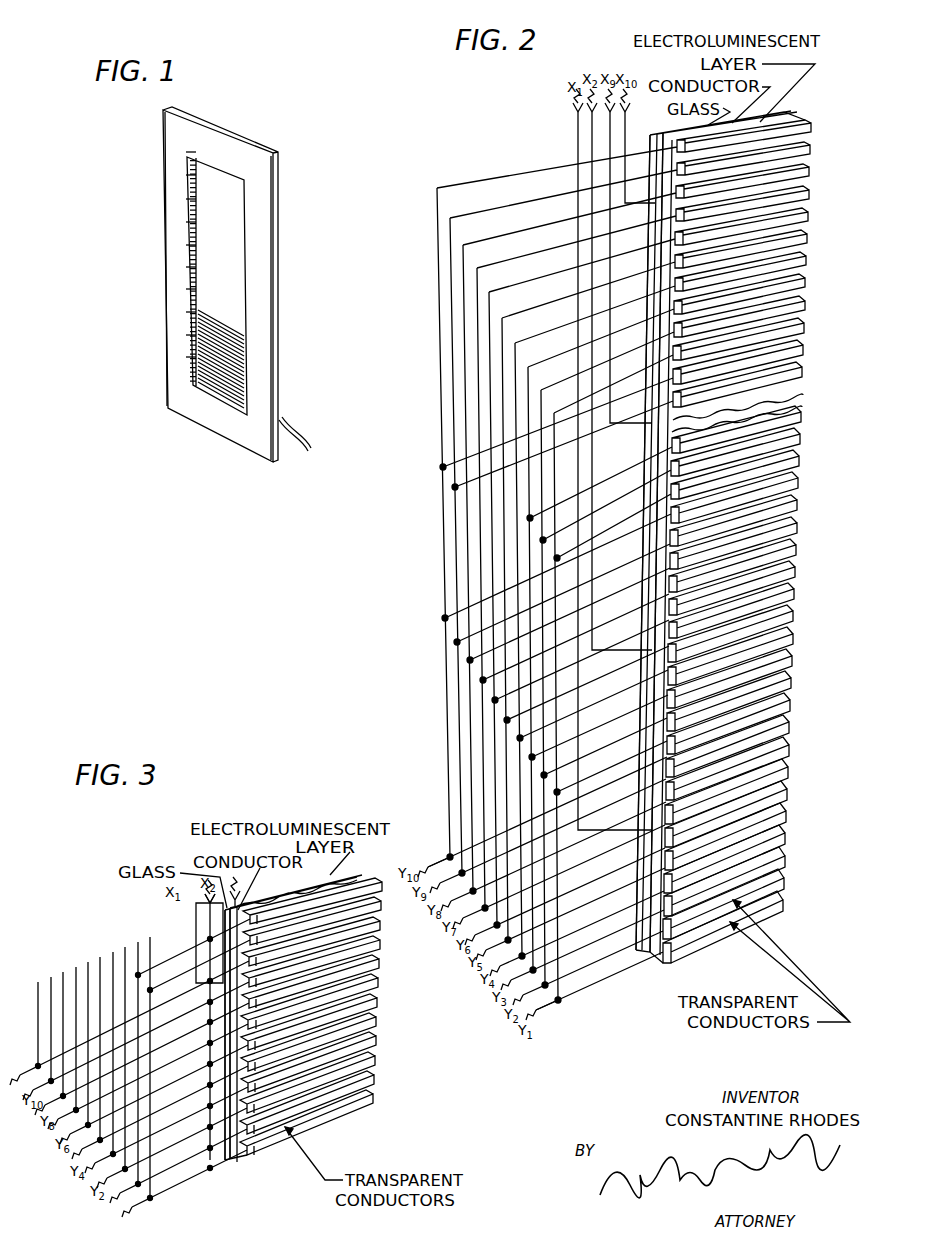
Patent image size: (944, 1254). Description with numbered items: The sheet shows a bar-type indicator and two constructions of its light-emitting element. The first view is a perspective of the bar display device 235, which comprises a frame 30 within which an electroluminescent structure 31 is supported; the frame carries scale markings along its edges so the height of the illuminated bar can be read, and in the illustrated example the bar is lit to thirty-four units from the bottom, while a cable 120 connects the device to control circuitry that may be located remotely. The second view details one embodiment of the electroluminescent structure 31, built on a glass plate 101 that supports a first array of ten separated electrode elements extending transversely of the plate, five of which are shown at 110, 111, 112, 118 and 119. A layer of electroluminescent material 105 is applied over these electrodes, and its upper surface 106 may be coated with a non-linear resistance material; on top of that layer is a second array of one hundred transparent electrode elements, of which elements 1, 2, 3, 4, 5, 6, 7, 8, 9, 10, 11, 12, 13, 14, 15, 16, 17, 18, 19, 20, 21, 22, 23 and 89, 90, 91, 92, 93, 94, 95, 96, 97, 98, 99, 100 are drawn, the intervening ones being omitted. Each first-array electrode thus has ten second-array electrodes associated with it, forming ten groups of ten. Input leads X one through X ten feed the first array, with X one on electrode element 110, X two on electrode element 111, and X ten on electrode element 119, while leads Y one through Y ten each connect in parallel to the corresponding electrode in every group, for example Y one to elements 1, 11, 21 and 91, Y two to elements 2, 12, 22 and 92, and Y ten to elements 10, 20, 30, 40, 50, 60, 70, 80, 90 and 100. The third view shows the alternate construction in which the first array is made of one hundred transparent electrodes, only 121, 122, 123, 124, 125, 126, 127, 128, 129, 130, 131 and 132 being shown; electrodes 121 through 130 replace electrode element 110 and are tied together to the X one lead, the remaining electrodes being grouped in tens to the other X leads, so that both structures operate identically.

In FIG. 2, the transparent electrode element 1 is at (786, 905).
In FIG. 3, the transparent electrode element 1 is at (376, 1099).
In FIG. 2, the transparent electrode element 2 is at (787, 883).
In FIG. 3, the transparent electrode element 2 is at (377, 1080).
In FIG. 2, the transparent electrode element 3 is at (788, 861).
In FIG. 3, the transparent electrode element 3 is at (378, 1061).
In FIG. 2, the transparent electrode element 4 is at (788, 838).
In FIG. 3, the transparent electrode element 4 is at (379, 1041).
In FIG. 2, the transparent electrode element 5 is at (789, 816).
In FIG. 3, the transparent electrode element 5 is at (379, 1022).
In FIG. 2, the transparent electrode element 6 is at (790, 794).
In FIG. 3, the transparent electrode element 6 is at (380, 1003).
In FIG. 2, the transparent electrode element 7 is at (791, 772).
In FIG. 3, the transparent electrode element 7 is at (381, 984).
In FIG. 2, the transparent electrode element 8 is at (792, 750).
In FIG. 3, the transparent electrode element 8 is at (382, 964).
In FIG. 2, the transparent electrode element 9 is at (792, 727).
In FIG. 3, the transparent electrode element 9 is at (383, 945).
In FIG. 1, the transparent electrode element 10 is at (190, 357).
In FIG. 2, the transparent electrode element 10 is at (793, 705).
In FIG. 3, the transparent electrode element 10 is at (383, 926).
In FIG. 2, the transparent electrode element 11 is at (794, 683).
In FIG. 3, the transparent electrode element 11 is at (384, 906).
In FIG. 2, the transparent electrode element 12 is at (795, 661).
In FIG. 3, the transparent electrode element 12 is at (385, 887).
In FIG. 2, the transparent electrode element 13 is at (796, 639).
In FIG. 2, the transparent electrode element 14 is at (796, 616).
In FIG. 2, the transparent electrode element 15 is at (797, 594).
In FIG. 2, the transparent electrode element 16 is at (798, 572).
In FIG. 2, the transparent electrode element 17 is at (799, 550).
In FIG. 2, the transparent electrode element 18 is at (800, 528).
In FIG. 2, the transparent electrode element 19 is at (800, 505).
In FIG. 1, the transparent electrode element 20 is at (190, 335).
In FIG. 2, the transparent electrode element 20 is at (801, 483).
In FIG. 2, the transparent electrode element 21 is at (802, 461).
In FIG. 2, the transparent electrode element 22 is at (803, 439).
In FIG. 2, the transparent electrode element 23 is at (804, 417).
In FIG. 1, the frame 30 is at (278, 288).
In FIG. 1, the electroluminescent structure 31 is at (230, 240).
In FIG. 1, the transparent electrode element 40 is at (190, 289).
In FIG. 1, the transparent electrode element 50 is at (190, 267).
In FIG. 1, the transparent electrode element 60 is at (190, 245).
In FIG. 1, the transparent electrode element 70 is at (190, 222).
In FIG. 1, the transparent electrode element 80 is at (190, 199).
In FIG. 2, the transparent electrode element 89 is at (805, 372).
In FIG. 1, the transparent electrode element 90 is at (190, 175).
In FIG. 2, the transparent electrode element 90 is at (806, 350).
In FIG. 2, the transparent electrode element 91 is at (807, 328).
In FIG. 2, the transparent electrode element 92 is at (808, 306).
In FIG. 2, the transparent electrode element 93 is at (808, 283).
In FIG. 2, the transparent electrode element 94 is at (809, 261).
In FIG. 2, the transparent electrode element 95 is at (810, 239).
In FIG. 2, the transparent electrode element 96 is at (811, 217).
In FIG. 2, the transparent electrode element 97 is at (812, 195).
In FIG. 2, the transparent electrode element 98 is at (812, 172).
In FIG. 2, the transparent electrode element 99 is at (813, 150).
In FIG. 1, the transparent electrode element 100 is at (190, 152).
In FIG. 2, the transparent electrode element 100 is at (814, 128).
In FIG. 2, the glass plate 101 is at (650, 955).
In FIG. 3, the glass plate 101 is at (118, 873).
In FIG. 2, the layer of electroluminescent material 105 is at (650, 946).
In FIG. 3, the layer of electroluminescent material 105 is at (235, 1160).
In FIG. 2, the upper surface 106 is at (806, 410).
In FIG. 2, the electrode element 110 is at (627, 848).
In FIG. 2, the electrode element 111 is at (637, 665).
In FIG. 2, the electrode element 112 is at (648, 520).
In FIG. 2, the electrode element 118 is at (654, 400).
In FIG. 2, the electrode element 119 is at (660, 300).
In FIG. 1, the cable 120 is at (303, 437).
In FIG. 3, the transparent electrode 121 is at (208, 1169).
In FIG. 3, the transparent electrode 122 is at (207, 1150).
In FIG. 3, the transparent electrode 123 is at (207, 1129).
In FIG. 3, the transparent electrode 124 is at (207, 1108).
In FIG. 3, the transparent electrode 125 is at (207, 1087).
In FIG. 3, the transparent electrode 126 is at (207, 1066).
In FIG. 3, the transparent electrode 127 is at (207, 1045).
In FIG. 3, the transparent electrode 128 is at (207, 1024).
In FIG. 3, the transparent electrode 129 is at (207, 1004).
In FIG. 3, the transparent electrode 130 is at (207, 966).
In FIG. 3, the transparent electrode 131 is at (208, 937).
In FIG. 3, the transparent electrode 132 is at (205, 908).
In FIG. 1, the bar display device 235 is at (300, 150).